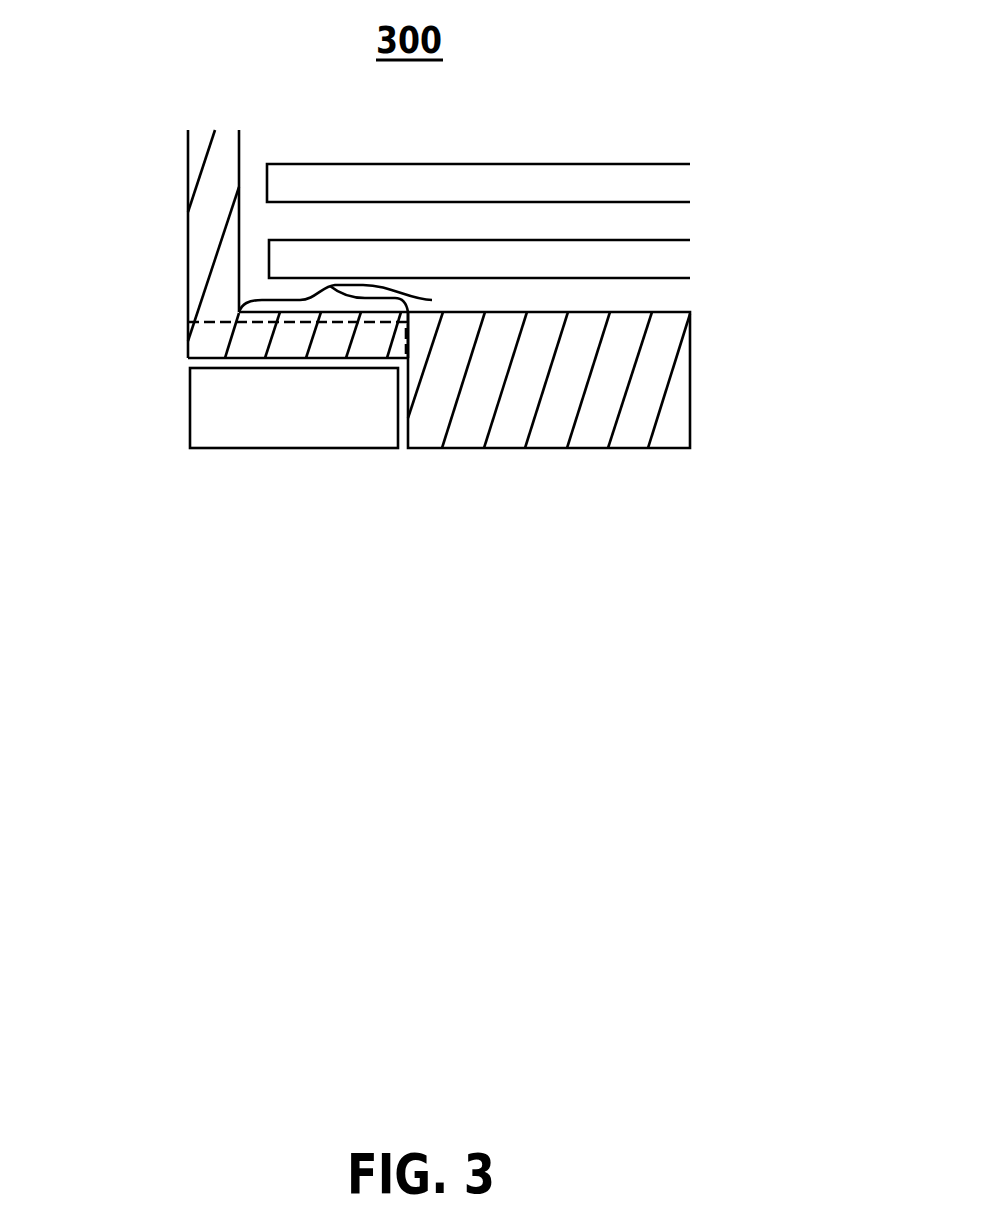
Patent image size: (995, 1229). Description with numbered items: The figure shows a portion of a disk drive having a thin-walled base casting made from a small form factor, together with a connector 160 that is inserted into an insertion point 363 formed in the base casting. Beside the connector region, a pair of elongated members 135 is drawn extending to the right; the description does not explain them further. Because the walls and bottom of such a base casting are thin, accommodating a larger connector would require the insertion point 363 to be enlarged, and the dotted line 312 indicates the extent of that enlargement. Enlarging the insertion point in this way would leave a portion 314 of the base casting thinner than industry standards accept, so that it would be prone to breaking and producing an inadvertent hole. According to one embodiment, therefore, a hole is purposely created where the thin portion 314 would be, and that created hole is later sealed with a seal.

The conductive lines 135 is at (660, 186).
The dotted line 312 is at (188, 322).
The insertion point 363 is at (188, 360).
The connector 160 is at (228, 408).
The portion of the base casting 314 is at (432, 300).